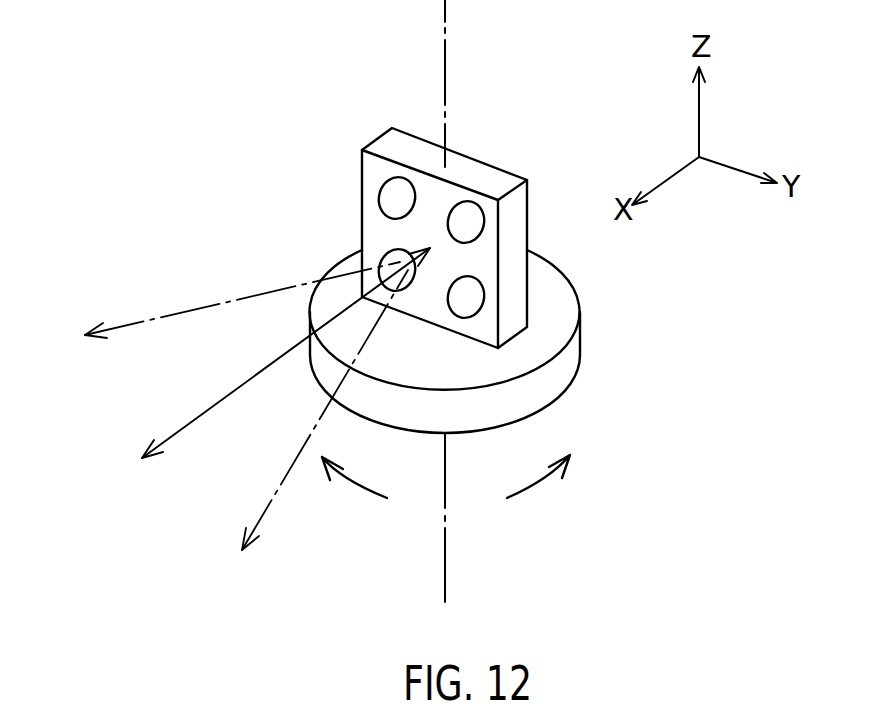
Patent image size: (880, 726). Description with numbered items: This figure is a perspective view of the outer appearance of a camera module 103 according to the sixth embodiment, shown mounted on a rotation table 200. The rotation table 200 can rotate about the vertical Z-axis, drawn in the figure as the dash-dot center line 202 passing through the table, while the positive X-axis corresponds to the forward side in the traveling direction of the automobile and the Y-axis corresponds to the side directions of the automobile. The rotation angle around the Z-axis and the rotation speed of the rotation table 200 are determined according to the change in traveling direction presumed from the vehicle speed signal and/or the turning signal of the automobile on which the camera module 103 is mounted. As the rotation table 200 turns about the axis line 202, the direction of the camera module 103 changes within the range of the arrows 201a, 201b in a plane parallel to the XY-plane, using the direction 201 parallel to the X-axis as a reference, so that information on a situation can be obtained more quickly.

The camera module 103 is at (362, 192).
The rotation table 200 is at (572, 353).
The direction 201 is at (190, 425).
The arrow 201a is at (173, 312).
The arrow 201b is at (272, 505).
The rotation axis 202 is at (445, 53).